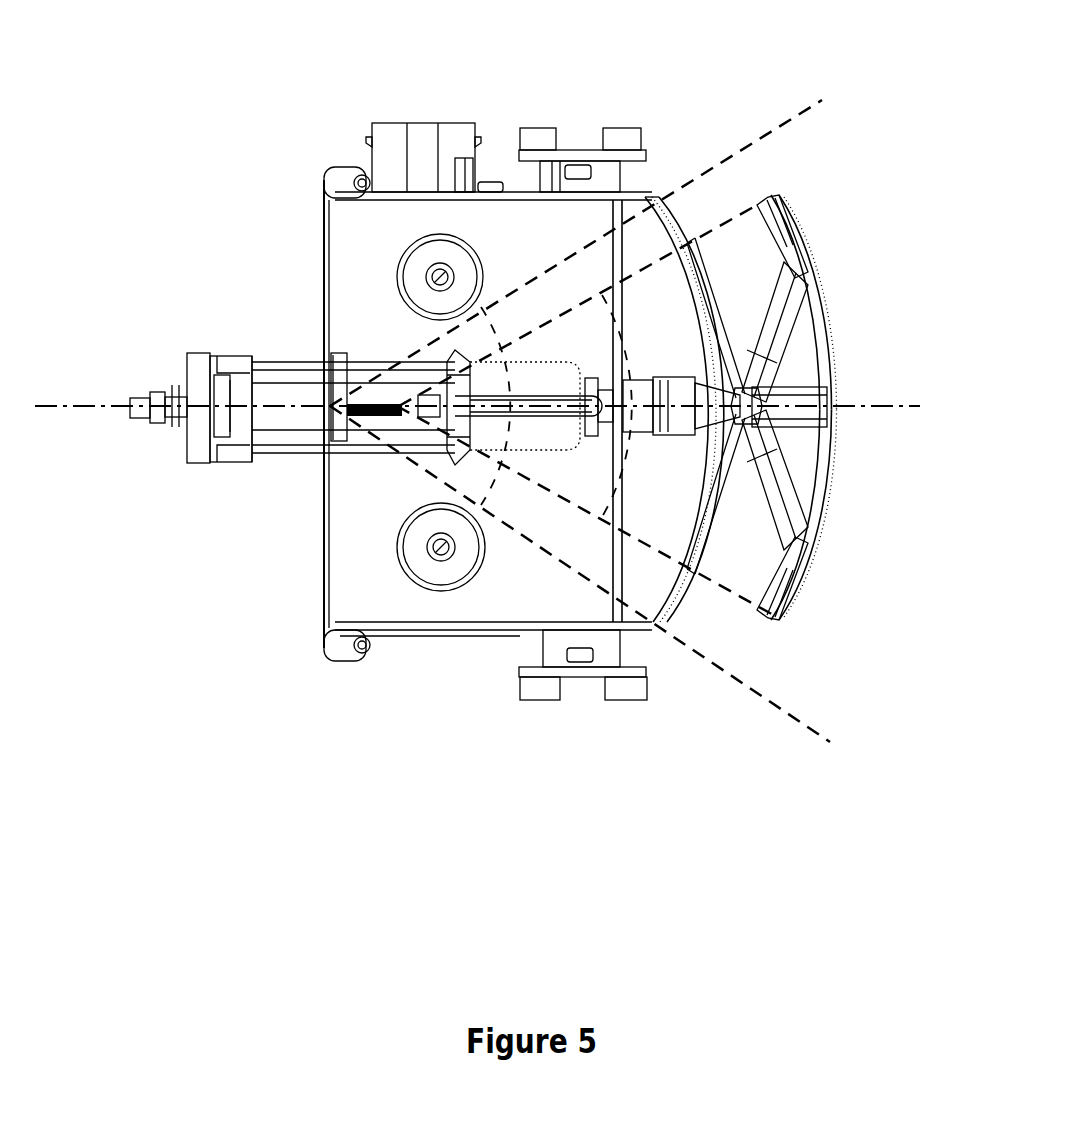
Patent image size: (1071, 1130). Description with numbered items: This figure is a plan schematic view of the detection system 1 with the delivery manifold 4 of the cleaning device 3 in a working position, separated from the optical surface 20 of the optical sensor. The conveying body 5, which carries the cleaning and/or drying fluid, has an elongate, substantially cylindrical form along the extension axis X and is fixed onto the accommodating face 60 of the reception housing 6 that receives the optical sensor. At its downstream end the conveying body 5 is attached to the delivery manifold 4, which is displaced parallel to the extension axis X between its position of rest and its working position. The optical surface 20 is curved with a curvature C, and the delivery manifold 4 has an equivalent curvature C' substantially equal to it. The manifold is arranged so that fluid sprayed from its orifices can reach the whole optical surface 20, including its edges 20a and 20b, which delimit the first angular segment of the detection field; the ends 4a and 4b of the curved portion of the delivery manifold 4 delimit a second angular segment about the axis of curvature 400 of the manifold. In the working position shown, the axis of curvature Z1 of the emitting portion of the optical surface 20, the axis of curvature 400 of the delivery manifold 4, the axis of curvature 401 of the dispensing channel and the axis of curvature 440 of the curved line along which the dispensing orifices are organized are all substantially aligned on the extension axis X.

The detection system 1 is at (476, 700).
The cleaning device 3 is at (157, 361).
The delivery manifold 4 is at (792, 377).
The end of the delivery manifold 4a is at (774, 193).
The end of the delivery manifold 4b is at (775, 618).
The conveying body 5 is at (264, 472).
The reception housing 6 is at (310, 245).
The optical surface 20 is at (688, 603).
The edge of the optical surface 20a is at (661, 187).
The edge of the optical surface 20b is at (660, 628).
The accommodating face 60 is at (352, 546).
The axis of curvature of the delivery manifold 400 is at (420, 407).
The axis of curvature of the dispensing channel 401 is at (433, 407).
The axis of curvature of the curved line 440 is at (466, 410).
The extension axis X is at (475, 392).
The axis of curvature of the emitting portion Z1 is at (342, 410).
The curvature of the optical surface C is at (576, 207).
The curvature of the delivery manifold C' is at (599, 327).